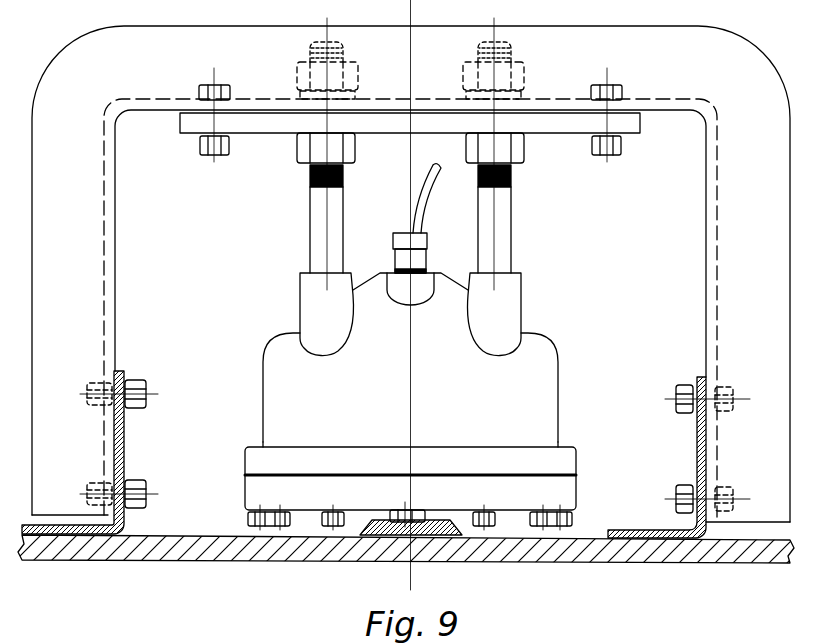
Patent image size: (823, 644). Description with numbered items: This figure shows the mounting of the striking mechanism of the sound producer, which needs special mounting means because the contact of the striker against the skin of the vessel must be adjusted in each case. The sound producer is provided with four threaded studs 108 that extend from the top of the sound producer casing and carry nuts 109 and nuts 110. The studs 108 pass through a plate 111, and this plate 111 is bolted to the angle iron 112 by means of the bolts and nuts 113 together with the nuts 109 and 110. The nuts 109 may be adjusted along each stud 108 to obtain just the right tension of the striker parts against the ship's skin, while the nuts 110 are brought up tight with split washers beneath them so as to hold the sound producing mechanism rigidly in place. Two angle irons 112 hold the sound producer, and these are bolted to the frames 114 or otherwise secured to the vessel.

The threaded studs 108 is at (310, 234).
The nuts 109 is at (297, 162).
The nuts 110 is at (297, 72).
The plate 111 is at (410, 137).
The angle iron 112 is at (411, 274).
The bolts and nuts 113 is at (200, 146).
The frames 114 is at (126, 433).